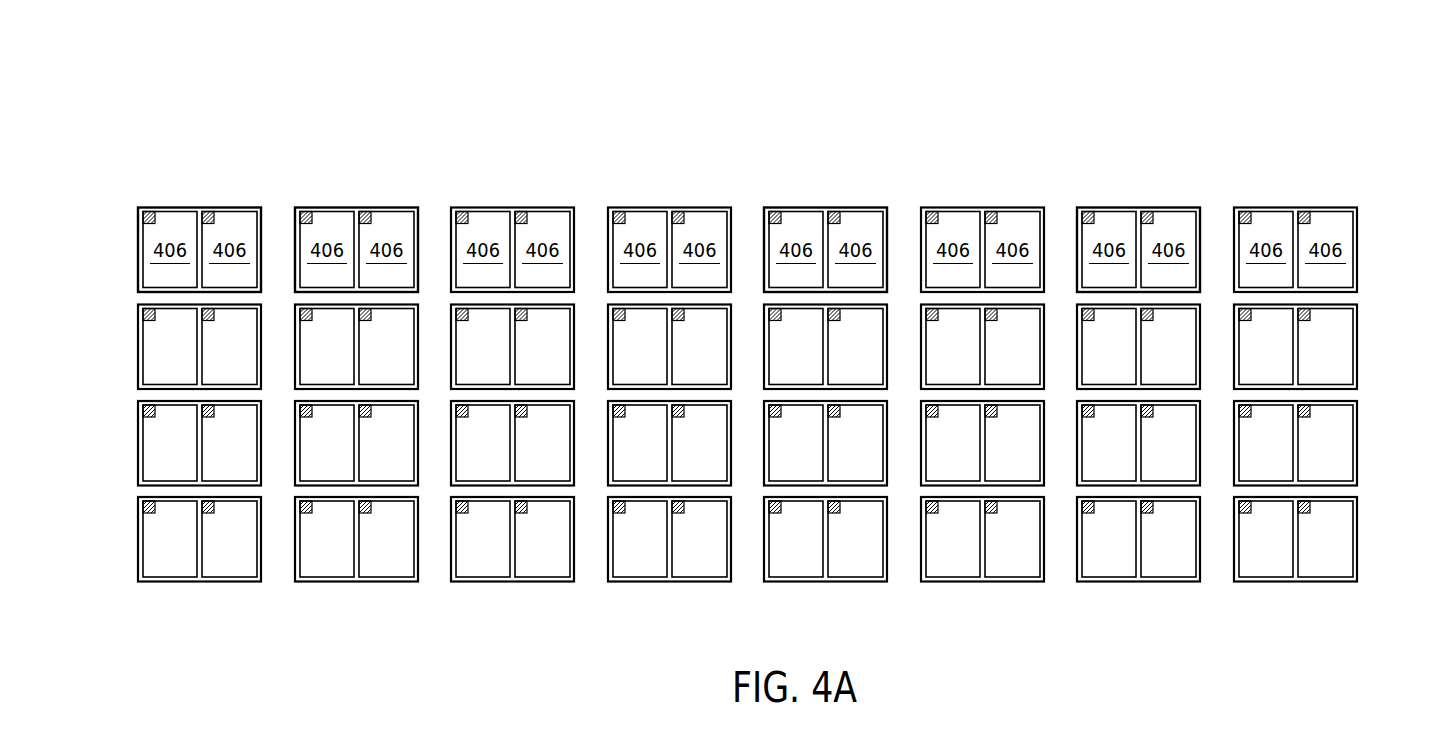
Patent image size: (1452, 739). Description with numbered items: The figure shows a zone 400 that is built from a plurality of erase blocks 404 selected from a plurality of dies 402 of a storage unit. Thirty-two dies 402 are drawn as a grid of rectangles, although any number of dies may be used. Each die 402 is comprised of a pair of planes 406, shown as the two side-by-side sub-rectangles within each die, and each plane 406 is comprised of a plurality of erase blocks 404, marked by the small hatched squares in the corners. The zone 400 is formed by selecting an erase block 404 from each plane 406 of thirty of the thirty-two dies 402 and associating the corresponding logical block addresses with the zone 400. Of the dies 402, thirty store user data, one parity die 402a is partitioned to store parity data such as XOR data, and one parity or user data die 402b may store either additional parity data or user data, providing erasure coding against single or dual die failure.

The zone 400 is at (238, 104).
The die 402 is at (470, 206).
The parity die 402a is at (1305, 583).
The parity or user data die 402b is at (1160, 583).
The erase block 404 is at (362, 211).
The plane 406 is at (748, 250).